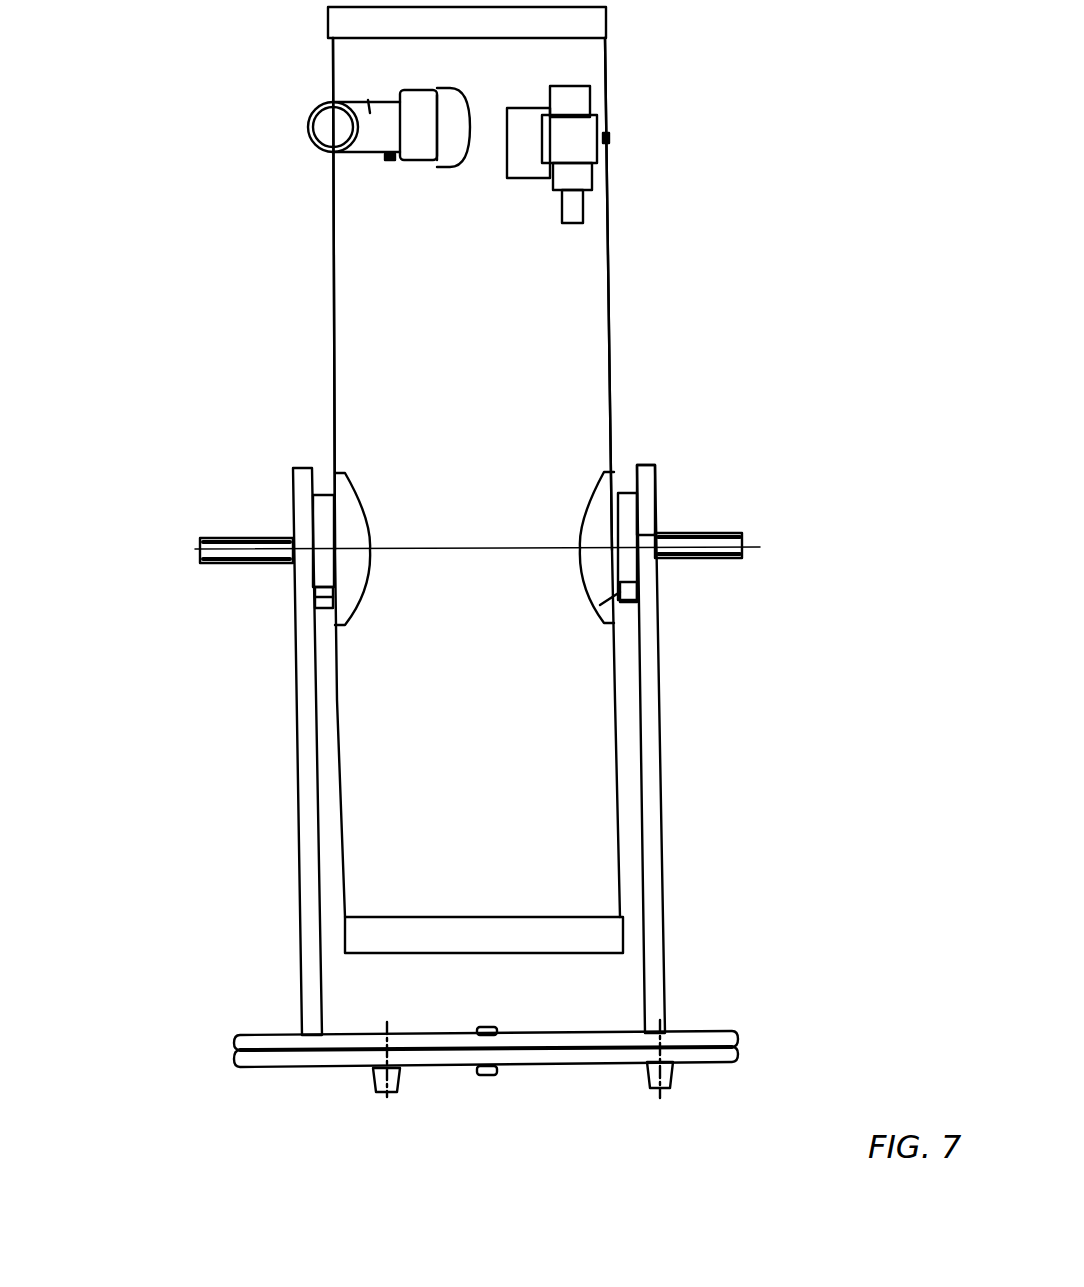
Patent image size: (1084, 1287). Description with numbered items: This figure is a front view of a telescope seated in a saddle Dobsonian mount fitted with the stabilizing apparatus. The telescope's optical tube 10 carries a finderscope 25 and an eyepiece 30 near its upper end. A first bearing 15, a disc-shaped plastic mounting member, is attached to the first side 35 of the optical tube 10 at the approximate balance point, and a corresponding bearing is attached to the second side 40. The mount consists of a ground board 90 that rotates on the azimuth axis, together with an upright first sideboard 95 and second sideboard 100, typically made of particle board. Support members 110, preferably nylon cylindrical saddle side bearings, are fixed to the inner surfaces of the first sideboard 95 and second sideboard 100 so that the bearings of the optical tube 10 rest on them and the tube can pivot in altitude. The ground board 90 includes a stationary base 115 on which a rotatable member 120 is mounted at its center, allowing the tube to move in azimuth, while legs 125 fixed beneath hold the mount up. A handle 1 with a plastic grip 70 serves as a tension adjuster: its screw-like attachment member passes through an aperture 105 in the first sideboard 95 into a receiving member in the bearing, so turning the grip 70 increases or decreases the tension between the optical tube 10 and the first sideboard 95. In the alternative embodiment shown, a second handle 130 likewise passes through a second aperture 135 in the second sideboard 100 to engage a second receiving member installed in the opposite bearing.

The handle 1 is at (762, 528).
The optical tube 10 is at (572, 268).
The first bearing 15 is at (625, 475).
The finderscope 25 is at (575, 100).
The eyepiece 30 is at (370, 108).
The first side 35 is at (610, 345).
The second side 40 is at (333, 298).
The grip 70 is at (320, 490).
The ground board 90 is at (507, 1074).
The first sideboard 95 is at (660, 745).
The second sideboard 100 is at (297, 752).
The aperture 105 is at (655, 515).
The support members 110 is at (316, 630).
The stationary base 115 is at (237, 1068).
The rotatable member 120 is at (233, 1037).
The legs 125 is at (390, 1093).
The second handle 130 is at (195, 535).
The second aperture 135 is at (290, 565).